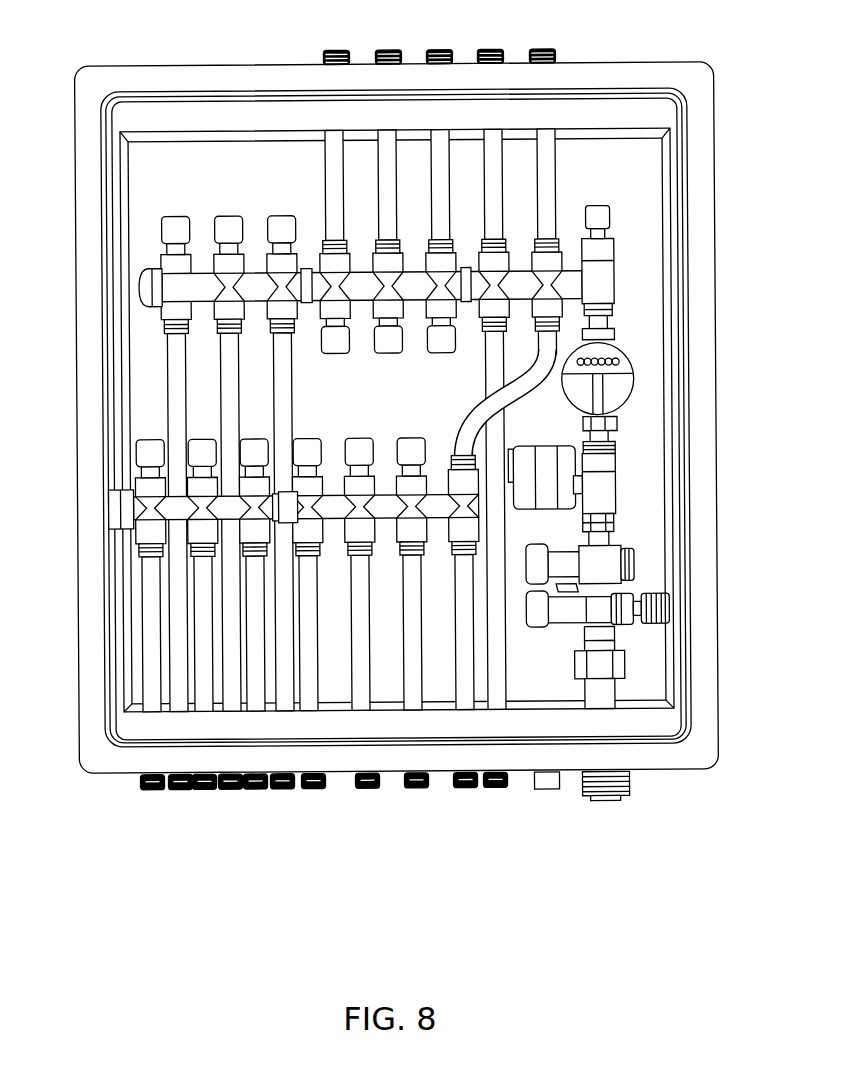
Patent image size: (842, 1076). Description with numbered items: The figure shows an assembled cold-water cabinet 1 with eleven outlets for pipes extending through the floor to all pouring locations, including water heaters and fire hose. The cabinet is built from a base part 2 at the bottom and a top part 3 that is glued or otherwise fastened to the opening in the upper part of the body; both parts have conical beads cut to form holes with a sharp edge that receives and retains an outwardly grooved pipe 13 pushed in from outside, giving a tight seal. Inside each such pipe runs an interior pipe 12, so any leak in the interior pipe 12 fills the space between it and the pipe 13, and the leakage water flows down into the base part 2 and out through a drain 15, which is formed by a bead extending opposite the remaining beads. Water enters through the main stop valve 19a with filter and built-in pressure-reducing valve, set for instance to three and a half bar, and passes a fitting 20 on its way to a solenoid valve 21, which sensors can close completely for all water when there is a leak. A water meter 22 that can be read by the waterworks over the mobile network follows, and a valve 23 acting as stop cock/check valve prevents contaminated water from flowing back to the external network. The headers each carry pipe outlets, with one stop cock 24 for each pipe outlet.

The housing box 1 is at (700, 752).
The base part 2 is at (647, 720).
The top part 3 is at (597, 113).
The interior pipe 12 is at (377, 778).
The pipe 13 is at (363, 788).
The drain 15 is at (543, 792).
The main stop valve 19a is at (668, 610).
The tee fitting 20 is at (632, 562).
The solenoid valve 21 is at (608, 492).
The water meter 22 is at (621, 387).
The valve 23 is at (612, 269).
The stop cock 24 is at (143, 445).